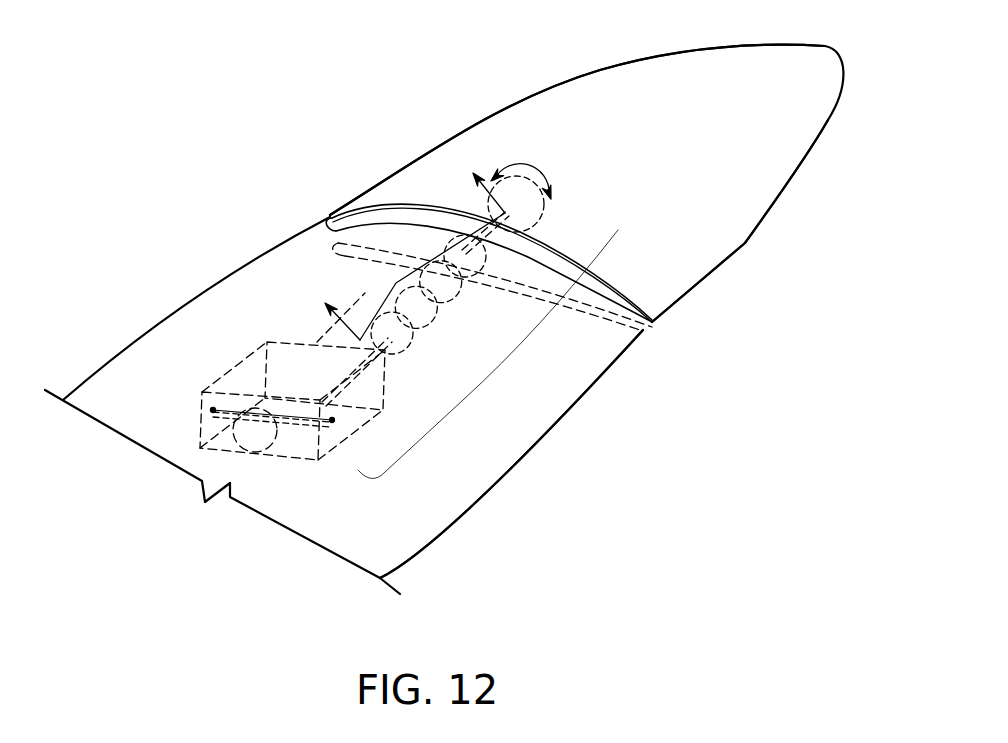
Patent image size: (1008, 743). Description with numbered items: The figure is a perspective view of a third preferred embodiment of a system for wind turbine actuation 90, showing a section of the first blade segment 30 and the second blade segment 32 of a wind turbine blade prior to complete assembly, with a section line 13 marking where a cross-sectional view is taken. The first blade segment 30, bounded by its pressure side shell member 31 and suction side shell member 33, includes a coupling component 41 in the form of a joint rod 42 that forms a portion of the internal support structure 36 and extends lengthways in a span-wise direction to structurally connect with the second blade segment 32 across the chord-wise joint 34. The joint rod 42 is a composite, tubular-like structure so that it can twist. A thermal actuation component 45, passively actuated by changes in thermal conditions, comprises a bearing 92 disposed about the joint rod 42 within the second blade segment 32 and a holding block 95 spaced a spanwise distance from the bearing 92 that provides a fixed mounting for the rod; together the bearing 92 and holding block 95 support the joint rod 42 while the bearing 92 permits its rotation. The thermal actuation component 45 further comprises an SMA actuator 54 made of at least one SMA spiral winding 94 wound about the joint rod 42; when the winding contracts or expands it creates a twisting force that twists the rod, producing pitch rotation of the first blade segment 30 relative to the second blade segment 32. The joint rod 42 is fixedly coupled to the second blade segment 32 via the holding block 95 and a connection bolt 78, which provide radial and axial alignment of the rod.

The cross-sectional view line 13 is at (424, 247).
The first blade segment 30 is at (785, 163).
The pressure side shell member 31 is at (505, 105).
The second blade segment 32 is at (228, 275).
The suction side shell member 33 is at (745, 250).
The chord-wise joint 34 is at (650, 331).
The internal support structure 36 is at (362, 298).
The coupling component 41 is at (543, 223).
The joint rod 42 is at (415, 330).
The thermal actuation component 45 is at (508, 366).
The SMA actuator 54 is at (394, 286).
The connection bolt 78 is at (333, 445).
The system for wind turbine actuation 90 is at (288, 86).
The bearing 92 is at (435, 200).
The SMA spiral winding 94 is at (420, 295).
The holding block 95 is at (243, 362).